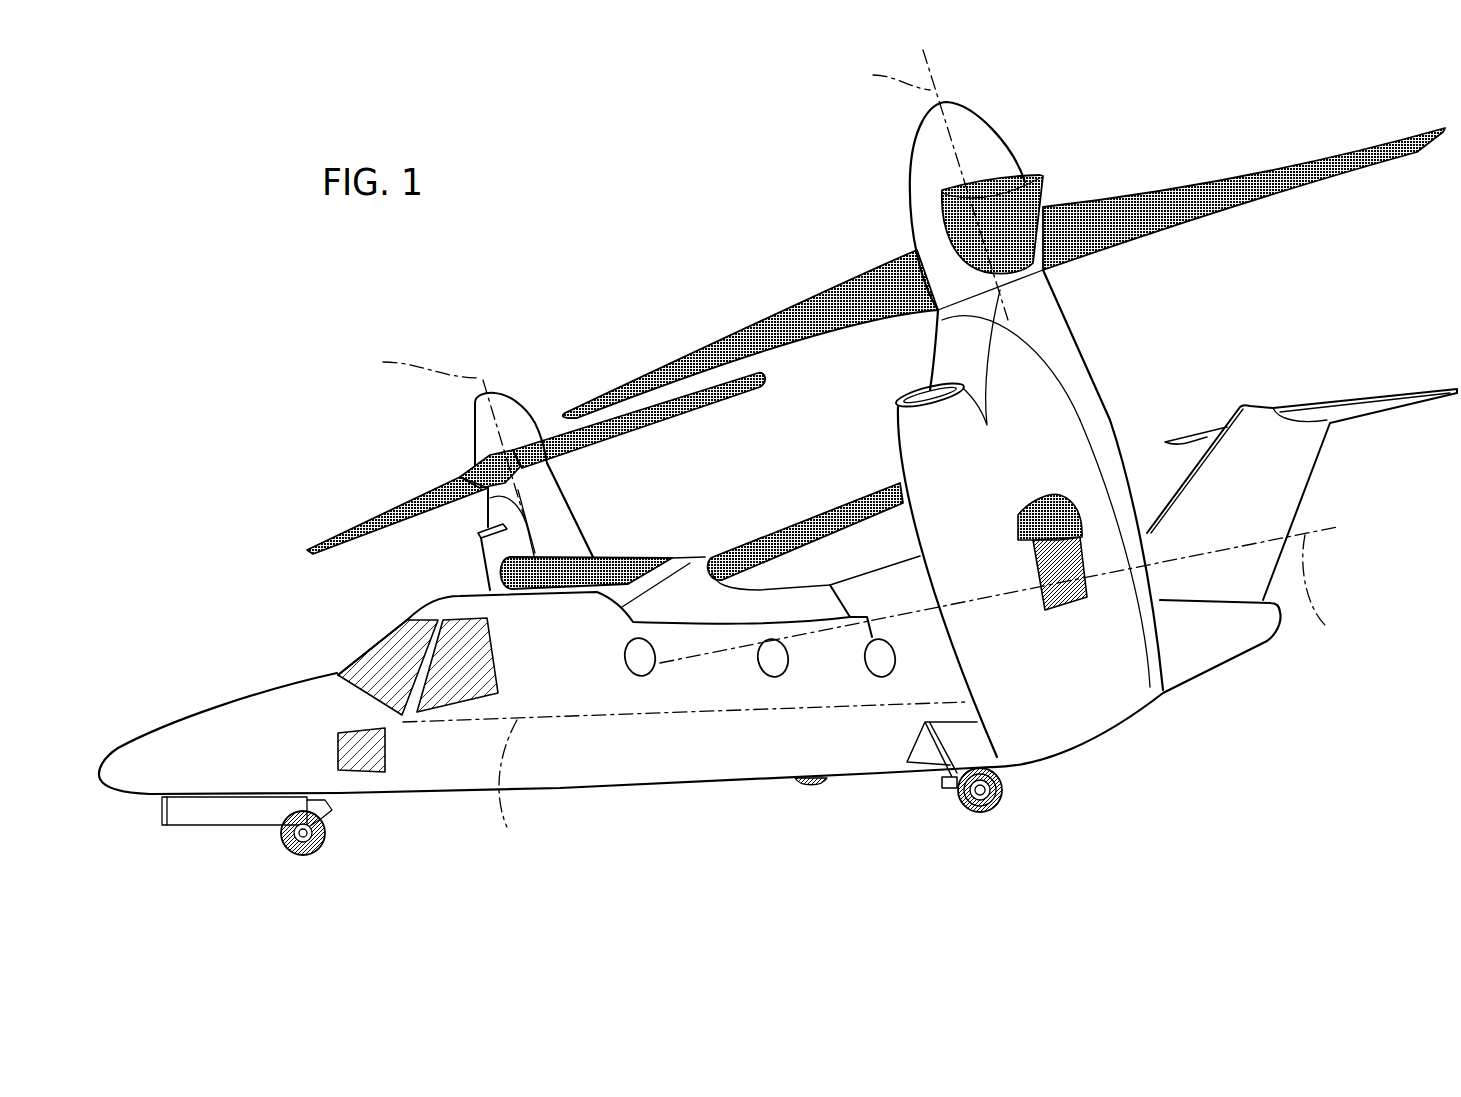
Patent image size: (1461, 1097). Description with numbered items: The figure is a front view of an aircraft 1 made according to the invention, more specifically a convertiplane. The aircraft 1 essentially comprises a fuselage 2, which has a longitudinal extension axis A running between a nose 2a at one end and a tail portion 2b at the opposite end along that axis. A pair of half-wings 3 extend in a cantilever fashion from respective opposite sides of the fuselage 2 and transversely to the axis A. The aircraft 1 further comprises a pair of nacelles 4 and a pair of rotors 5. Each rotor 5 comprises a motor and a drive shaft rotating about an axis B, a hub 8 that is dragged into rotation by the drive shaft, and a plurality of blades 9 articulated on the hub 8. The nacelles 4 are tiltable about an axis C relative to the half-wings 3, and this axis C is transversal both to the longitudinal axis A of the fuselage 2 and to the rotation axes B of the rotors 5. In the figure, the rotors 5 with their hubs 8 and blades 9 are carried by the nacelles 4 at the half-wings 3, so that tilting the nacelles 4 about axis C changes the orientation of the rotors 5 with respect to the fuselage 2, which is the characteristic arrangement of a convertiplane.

The aircraft 1 is at (635, 266).
The fuselage 2 is at (667, 743).
The nose 2a is at (187, 750).
The tail portion 2b is at (1260, 472).
The half-wings 3 is at (613, 570).
The nacelles 4 is at (503, 548).
The rotors 5 is at (547, 507).
The hub 8 is at (520, 440).
The blades 9 is at (377, 517).